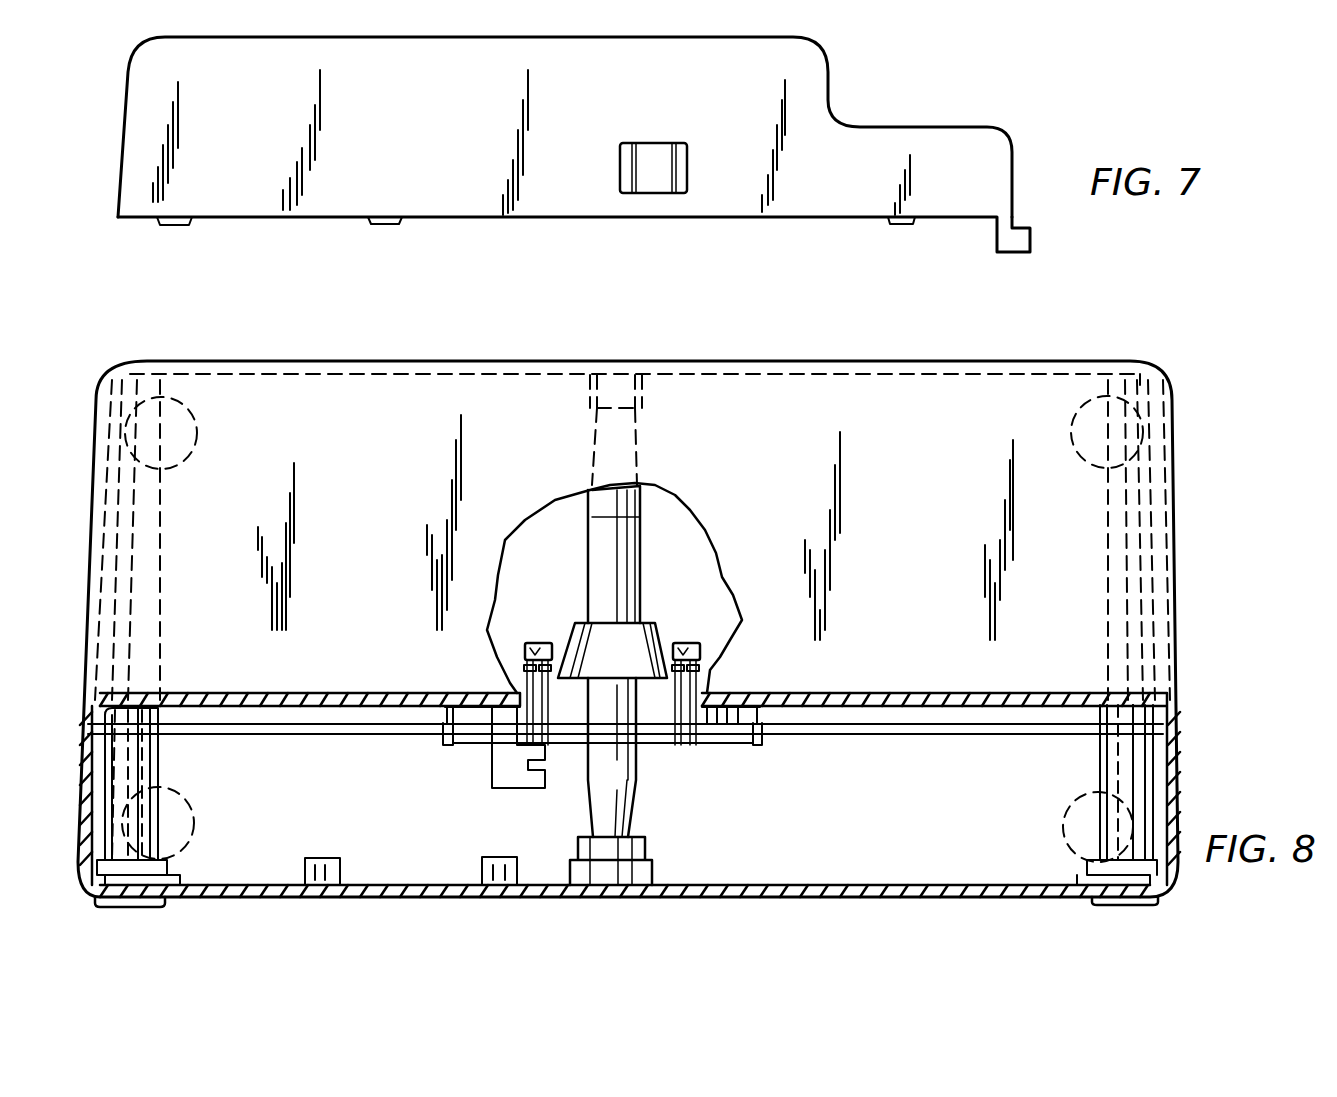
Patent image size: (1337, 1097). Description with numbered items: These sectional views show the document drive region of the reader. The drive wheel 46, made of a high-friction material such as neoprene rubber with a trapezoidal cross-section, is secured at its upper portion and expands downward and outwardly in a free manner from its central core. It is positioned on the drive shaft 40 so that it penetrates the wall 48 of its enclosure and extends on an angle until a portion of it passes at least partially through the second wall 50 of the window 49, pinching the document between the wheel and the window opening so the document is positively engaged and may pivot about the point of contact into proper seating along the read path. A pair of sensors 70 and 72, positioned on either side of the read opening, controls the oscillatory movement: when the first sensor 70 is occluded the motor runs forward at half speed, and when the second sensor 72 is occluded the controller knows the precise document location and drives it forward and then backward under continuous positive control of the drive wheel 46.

In FIG. 7, the second wall 50 is at (787, 58).
In FIG. 7, the window 49 is at (687, 160).
In FIG. 8, the wall 48 is at (377, 397).
In FIG. 8, the drive shaft 40 is at (641, 545).
In FIG. 8, the drive wheel 46 is at (662, 609).
In FIG. 8, the first sensor 70 is at (538, 643).
In FIG. 8, the second sensor 72 is at (700, 655).